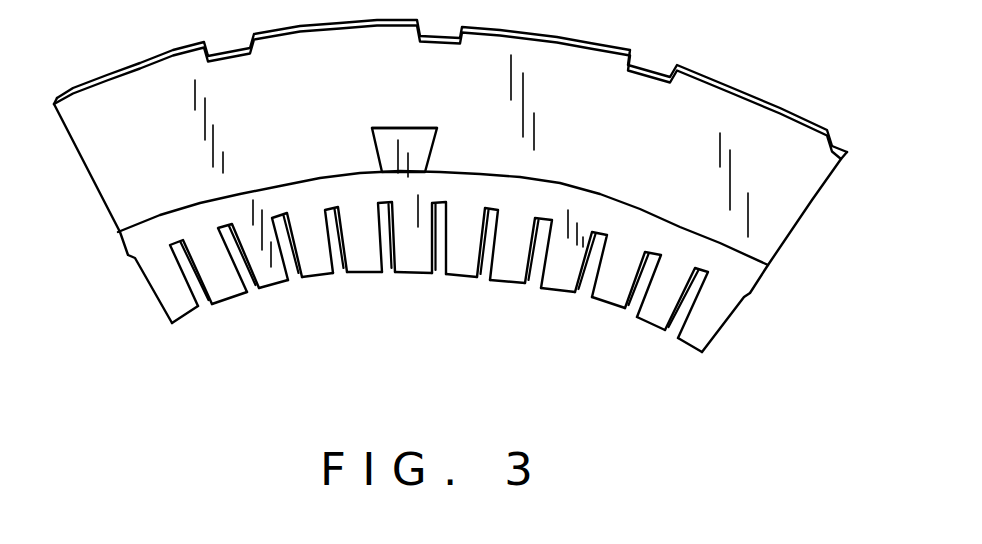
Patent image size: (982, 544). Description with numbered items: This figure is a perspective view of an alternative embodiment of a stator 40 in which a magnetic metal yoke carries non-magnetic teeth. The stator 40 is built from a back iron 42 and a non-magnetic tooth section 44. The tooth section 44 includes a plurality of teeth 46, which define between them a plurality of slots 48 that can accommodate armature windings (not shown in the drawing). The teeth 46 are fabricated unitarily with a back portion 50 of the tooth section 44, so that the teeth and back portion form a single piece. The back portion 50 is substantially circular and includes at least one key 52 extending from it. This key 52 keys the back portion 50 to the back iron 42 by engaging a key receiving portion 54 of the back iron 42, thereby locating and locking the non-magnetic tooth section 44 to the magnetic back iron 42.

The stator 40 is at (455, 216).
The back iron 42 is at (790, 238).
The non-magnetic tooth section 44 is at (728, 318).
The teeth 46 is at (418, 275).
The slots 48 is at (487, 281).
The back portion 50 is at (112, 250).
The key 52 is at (432, 155).
The key receiving portion 54 is at (412, 128).